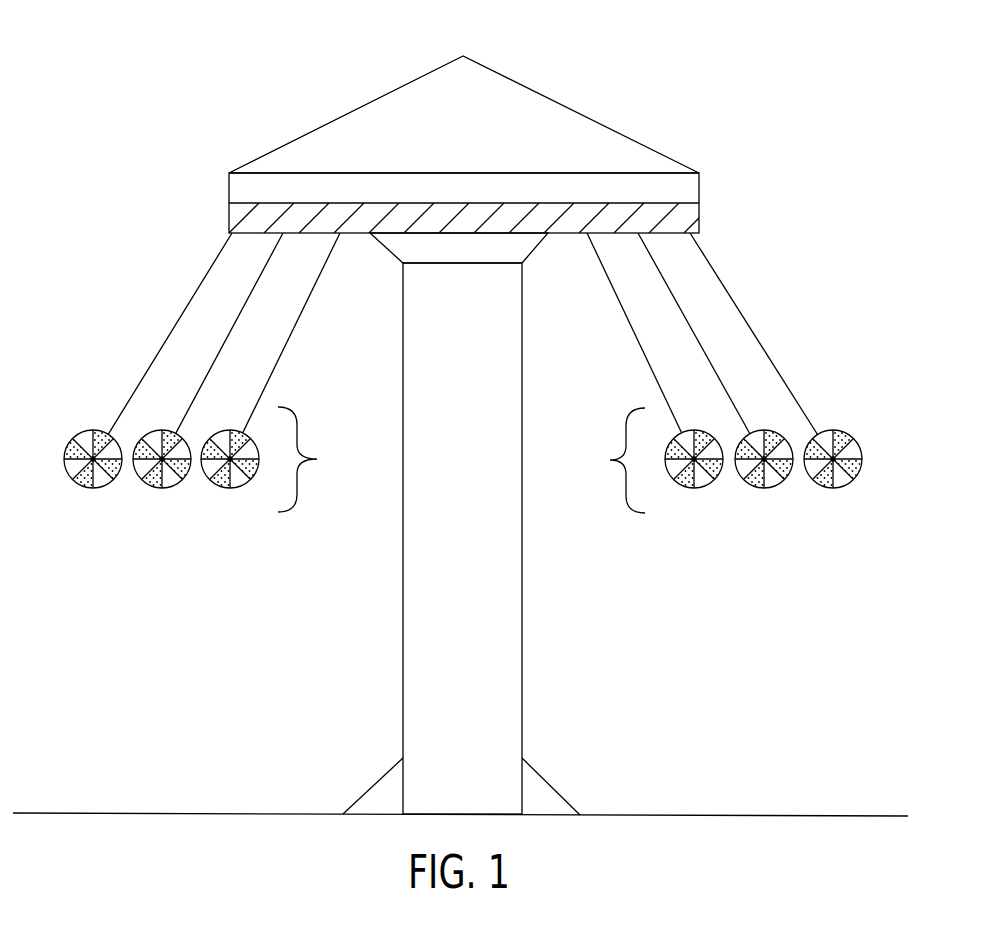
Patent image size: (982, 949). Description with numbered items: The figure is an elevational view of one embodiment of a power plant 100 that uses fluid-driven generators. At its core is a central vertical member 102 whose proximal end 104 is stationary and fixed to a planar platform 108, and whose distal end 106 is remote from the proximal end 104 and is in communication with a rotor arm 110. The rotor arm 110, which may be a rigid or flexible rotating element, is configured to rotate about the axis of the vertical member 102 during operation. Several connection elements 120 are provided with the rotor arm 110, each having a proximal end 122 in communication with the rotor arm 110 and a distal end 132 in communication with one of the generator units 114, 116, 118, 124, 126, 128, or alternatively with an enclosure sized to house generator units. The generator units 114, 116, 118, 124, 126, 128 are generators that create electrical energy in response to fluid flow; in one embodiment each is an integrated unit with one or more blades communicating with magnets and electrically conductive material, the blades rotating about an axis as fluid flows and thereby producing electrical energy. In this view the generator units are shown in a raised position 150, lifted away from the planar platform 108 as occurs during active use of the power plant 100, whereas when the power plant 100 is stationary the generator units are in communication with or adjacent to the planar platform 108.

The power plant 100 is at (162, 80).
The central vertical member 102 is at (403, 582).
The proximal end 104 is at (428, 815).
The distal end 106 is at (406, 266).
The planar platform 108 is at (257, 813).
The rotor arm 110 is at (361, 222).
The generator unit 114 is at (93, 488).
The generator unit 116 is at (162, 488).
The generator unit 118 is at (230, 488).
The connection element 120 is at (179, 318).
The proximal end 122 is at (231, 236).
The generator unit 124 is at (694, 488).
The generator unit 126 is at (764, 488).
The generator unit 128 is at (833, 488).
The distal end 132 is at (103, 430).
The raised position 150 is at (317, 459).